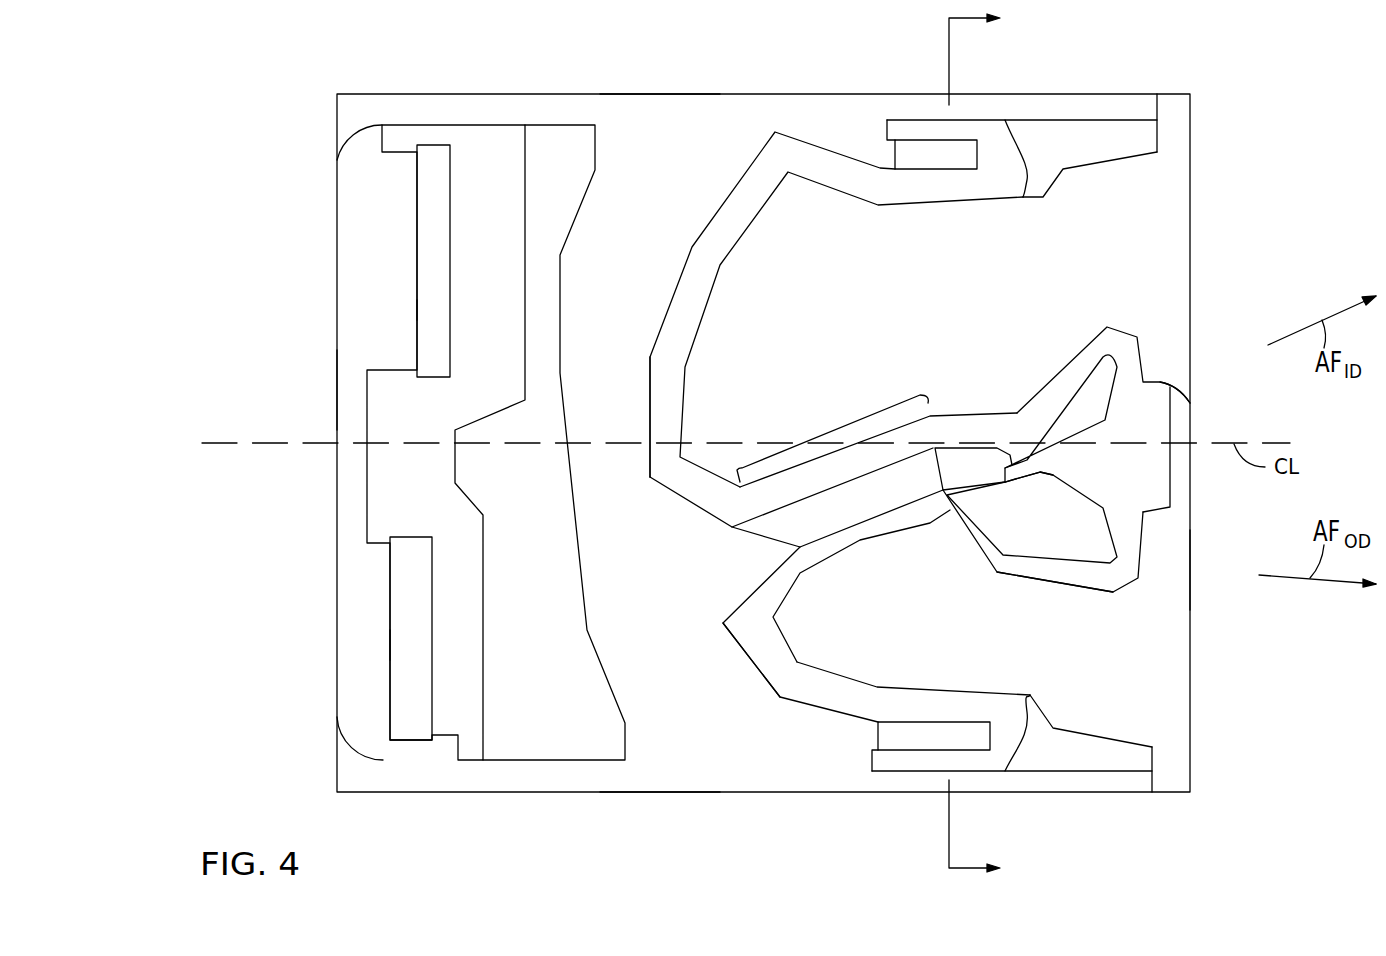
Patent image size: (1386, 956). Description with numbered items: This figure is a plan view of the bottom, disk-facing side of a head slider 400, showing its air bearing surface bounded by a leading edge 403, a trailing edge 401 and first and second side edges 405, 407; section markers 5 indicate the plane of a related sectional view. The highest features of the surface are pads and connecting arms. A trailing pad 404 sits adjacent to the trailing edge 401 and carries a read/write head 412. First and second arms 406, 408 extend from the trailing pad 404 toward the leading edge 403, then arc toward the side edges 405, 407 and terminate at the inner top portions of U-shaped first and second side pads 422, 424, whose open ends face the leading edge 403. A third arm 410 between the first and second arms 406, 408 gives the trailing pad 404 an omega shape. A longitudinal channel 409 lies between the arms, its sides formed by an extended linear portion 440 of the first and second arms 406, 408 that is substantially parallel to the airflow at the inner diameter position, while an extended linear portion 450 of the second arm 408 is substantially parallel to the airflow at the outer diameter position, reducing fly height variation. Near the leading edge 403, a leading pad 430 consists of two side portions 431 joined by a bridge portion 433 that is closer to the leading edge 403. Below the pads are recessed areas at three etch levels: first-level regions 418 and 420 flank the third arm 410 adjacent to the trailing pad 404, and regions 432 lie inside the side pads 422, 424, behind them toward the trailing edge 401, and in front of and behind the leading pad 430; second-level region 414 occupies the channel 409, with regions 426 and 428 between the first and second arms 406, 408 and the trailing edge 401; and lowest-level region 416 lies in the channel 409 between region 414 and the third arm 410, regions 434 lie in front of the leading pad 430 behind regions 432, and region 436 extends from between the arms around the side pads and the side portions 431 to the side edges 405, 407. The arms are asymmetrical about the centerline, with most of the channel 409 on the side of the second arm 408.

The head slider 400 is at (1216, 118).
The trailing edge 401 is at (1193, 564).
The leading edge 403 is at (320, 389).
The trailing pad 404 is at (1152, 488).
The first side edge 405 is at (657, 94).
The first arm 406 is at (977, 425).
The second side edge 407 is at (665, 795).
The second arm 408 is at (893, 523).
The longitudinal channel 409 is at (743, 568).
The third arm 410 is at (1045, 465).
The read/write head 412 is at (1180, 420).
The region 414 is at (877, 503).
The region 416 is at (990, 475).
The region 418 is at (1105, 413).
The region 420 is at (1082, 537).
The first side pad 422 is at (1002, 150).
The second side pad 424 is at (1003, 737).
The region 426 is at (962, 297).
The region 428 is at (1155, 711).
The leading pad 430 is at (475, 163).
The side portions 431 is at (512, 270).
The regions 432 is at (380, 262).
The bridge portion 433 is at (430, 505).
The regions 434 is at (432, 307).
The region 436 is at (670, 580).
The extended linear portion 440 is at (840, 428).
The extended linear portion 450 is at (1115, 598).
The section line 5 is at (987, 444).